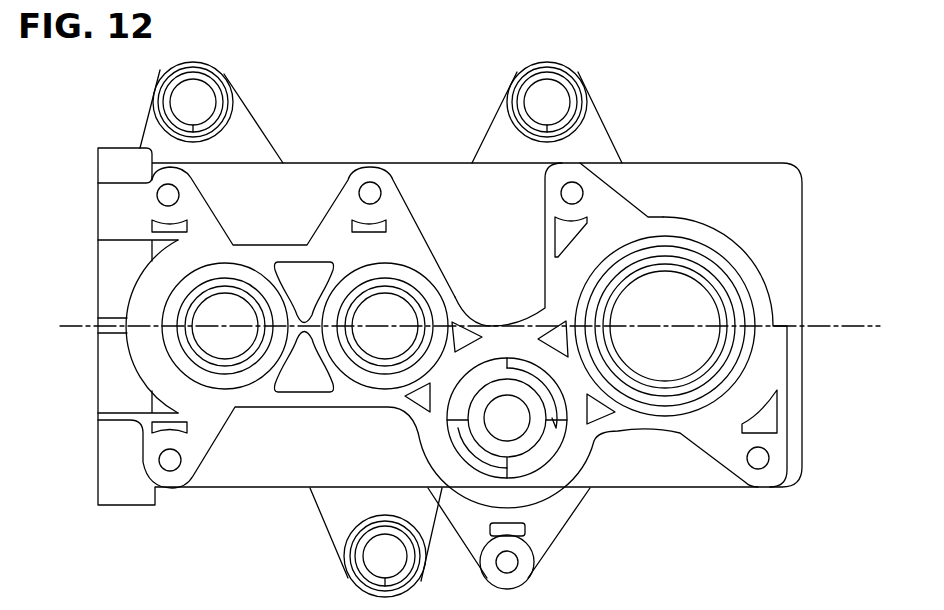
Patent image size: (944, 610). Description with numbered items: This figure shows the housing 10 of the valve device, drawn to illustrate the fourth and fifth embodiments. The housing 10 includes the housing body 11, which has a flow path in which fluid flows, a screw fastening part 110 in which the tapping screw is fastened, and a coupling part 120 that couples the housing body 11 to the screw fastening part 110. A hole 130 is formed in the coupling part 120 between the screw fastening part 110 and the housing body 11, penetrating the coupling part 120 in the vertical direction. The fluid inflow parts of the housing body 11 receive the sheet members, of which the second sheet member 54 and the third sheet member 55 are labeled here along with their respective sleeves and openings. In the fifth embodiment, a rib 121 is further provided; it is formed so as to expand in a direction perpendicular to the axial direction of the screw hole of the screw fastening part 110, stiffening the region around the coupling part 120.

The housing 10 is at (802, 205).
The housing body 11 is at (730, 237).
The second sheet member 54 is at (390, 290).
The third sheet member 55 is at (244, 290).
The screw fastening part 110 is at (588, 165).
The coupling part 120 is at (545, 232).
The rib 121 is at (648, 217).
The hole 130 is at (587, 230).